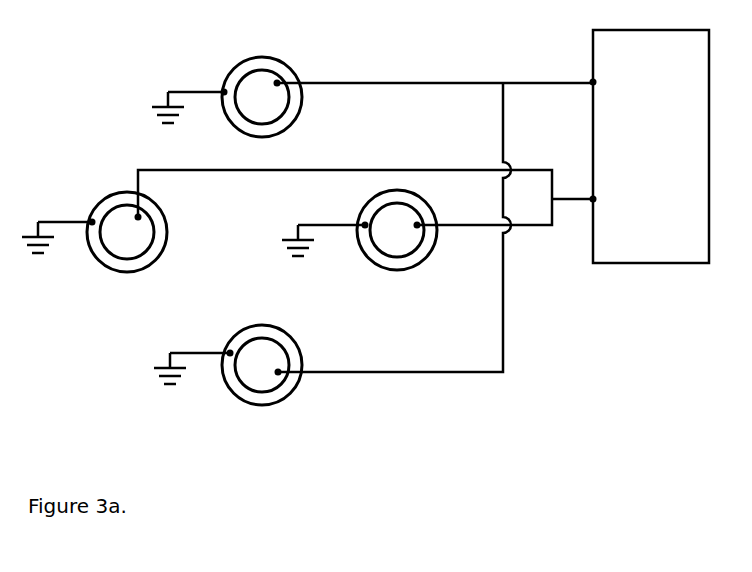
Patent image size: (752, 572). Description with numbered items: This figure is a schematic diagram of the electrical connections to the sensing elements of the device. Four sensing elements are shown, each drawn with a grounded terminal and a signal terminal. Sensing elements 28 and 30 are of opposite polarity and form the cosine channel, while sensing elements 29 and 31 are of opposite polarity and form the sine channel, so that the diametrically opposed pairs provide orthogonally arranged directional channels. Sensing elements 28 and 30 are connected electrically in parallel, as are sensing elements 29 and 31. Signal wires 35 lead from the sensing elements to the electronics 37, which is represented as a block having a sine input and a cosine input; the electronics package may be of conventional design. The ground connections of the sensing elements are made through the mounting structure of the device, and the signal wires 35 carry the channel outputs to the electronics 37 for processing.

The sensing element 28 is at (397, 230).
The sensing element 29 is at (262, 97).
The sensing element 30 is at (127, 232).
The sensing element 31 is at (262, 365).
The signal wires 35 is at (432, 169).
The electronics 37 is at (660, 263).